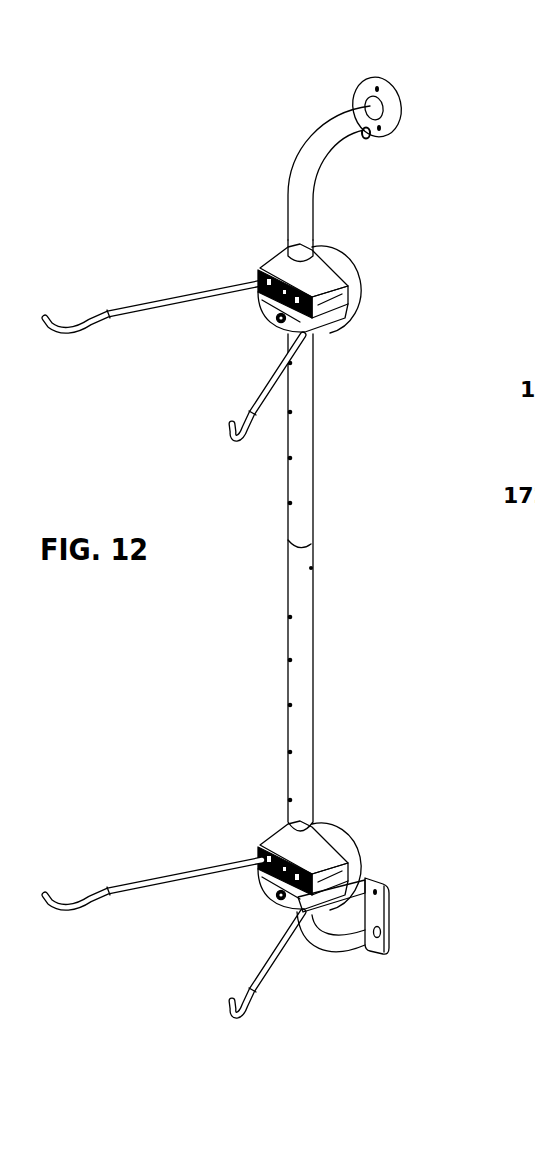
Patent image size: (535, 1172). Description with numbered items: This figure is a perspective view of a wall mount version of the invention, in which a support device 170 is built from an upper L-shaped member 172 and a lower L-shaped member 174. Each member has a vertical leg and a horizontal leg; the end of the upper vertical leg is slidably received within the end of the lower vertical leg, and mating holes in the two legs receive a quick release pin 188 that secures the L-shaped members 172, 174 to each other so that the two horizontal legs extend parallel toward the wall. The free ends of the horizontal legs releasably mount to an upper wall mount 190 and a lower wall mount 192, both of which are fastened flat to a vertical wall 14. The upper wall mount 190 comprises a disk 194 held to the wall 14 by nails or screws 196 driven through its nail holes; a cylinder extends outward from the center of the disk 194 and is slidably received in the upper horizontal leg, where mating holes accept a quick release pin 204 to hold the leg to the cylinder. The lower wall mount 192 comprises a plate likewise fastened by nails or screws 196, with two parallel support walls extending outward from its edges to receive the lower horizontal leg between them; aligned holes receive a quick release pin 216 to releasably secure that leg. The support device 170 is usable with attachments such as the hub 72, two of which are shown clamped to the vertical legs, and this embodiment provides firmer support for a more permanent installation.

The vertical wall 14 is at (283, 97).
The hub 72 is at (340, 265).
The support device 170 is at (382, 385).
The upper L-shaped member 172 is at (340, 492).
The lower L-shaped member 174 is at (335, 706).
The quick release pin 188 is at (315, 613).
The upper wall mount 190 is at (441, 113).
The lower wall mount 192 is at (401, 947).
The disk 194 is at (401, 134).
The nails or screws 196 is at (367, 107).
The quick release pin 204 is at (366, 136).
The quick release pin 216 is at (364, 944).